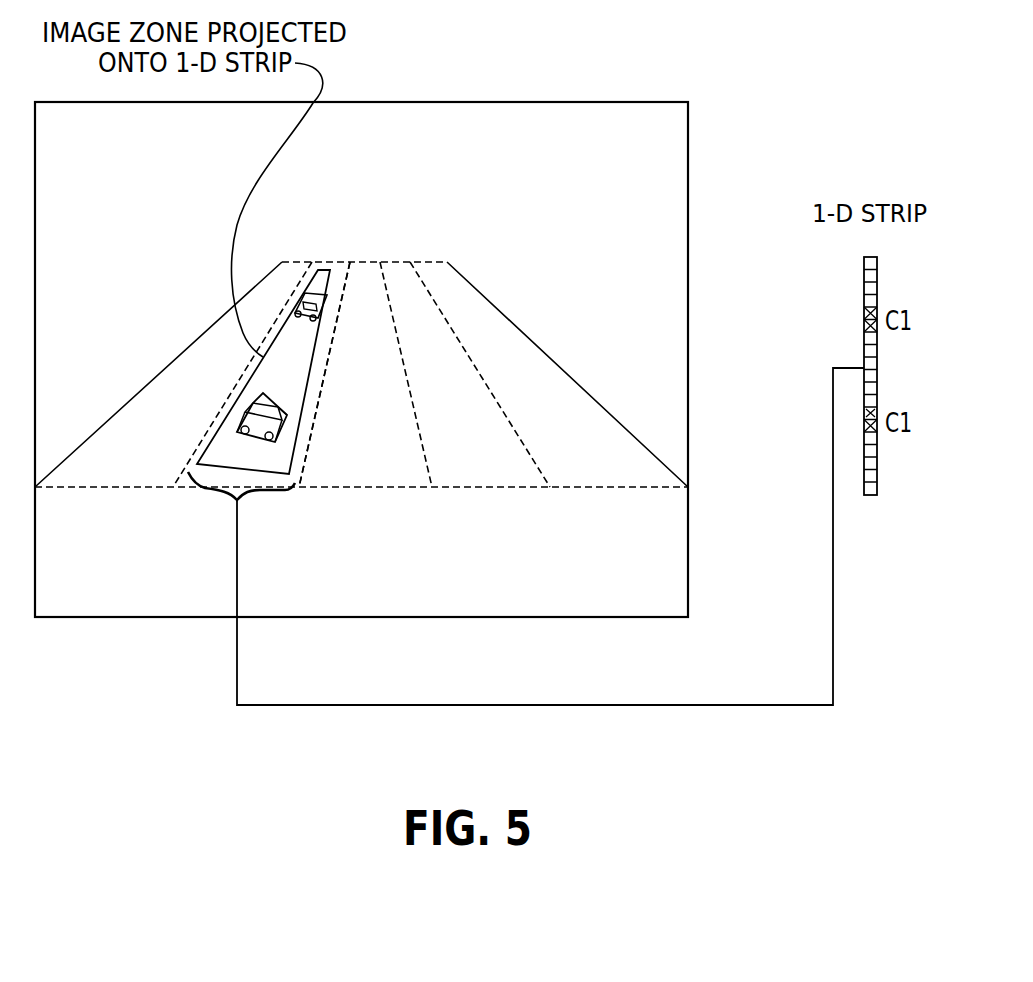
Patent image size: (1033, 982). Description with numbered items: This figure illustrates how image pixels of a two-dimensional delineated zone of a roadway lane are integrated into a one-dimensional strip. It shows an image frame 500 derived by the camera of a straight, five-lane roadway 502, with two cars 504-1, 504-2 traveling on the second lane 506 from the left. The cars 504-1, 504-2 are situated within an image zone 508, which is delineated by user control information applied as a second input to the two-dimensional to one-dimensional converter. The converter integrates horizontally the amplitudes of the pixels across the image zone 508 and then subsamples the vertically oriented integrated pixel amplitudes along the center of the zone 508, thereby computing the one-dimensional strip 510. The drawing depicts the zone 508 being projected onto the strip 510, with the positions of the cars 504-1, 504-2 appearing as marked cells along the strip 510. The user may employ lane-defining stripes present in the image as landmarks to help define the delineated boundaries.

The image frame 500 is at (537, 102).
The roadway 502 is at (535, 342).
The car 504-1 is at (283, 418).
The car 504-2 is at (325, 307).
The second lane 506 is at (335, 335).
The image zone 508 is at (313, 370).
The 1D strip 510 is at (864, 272).